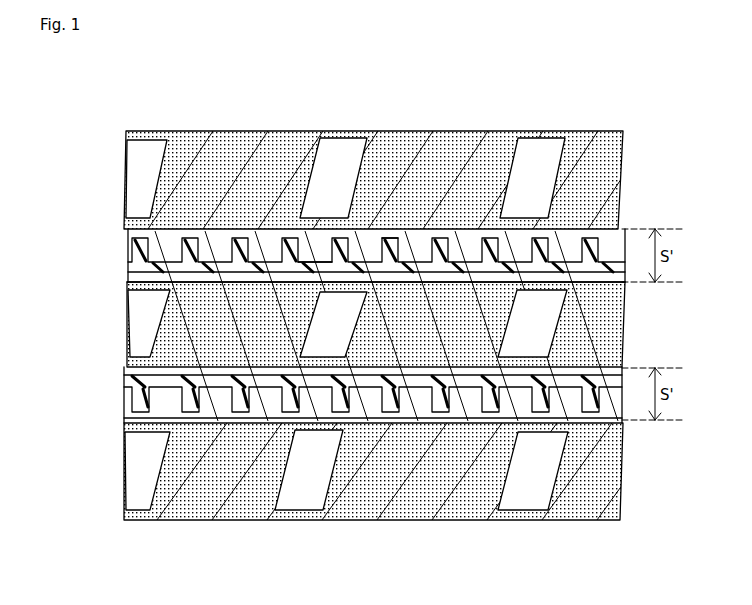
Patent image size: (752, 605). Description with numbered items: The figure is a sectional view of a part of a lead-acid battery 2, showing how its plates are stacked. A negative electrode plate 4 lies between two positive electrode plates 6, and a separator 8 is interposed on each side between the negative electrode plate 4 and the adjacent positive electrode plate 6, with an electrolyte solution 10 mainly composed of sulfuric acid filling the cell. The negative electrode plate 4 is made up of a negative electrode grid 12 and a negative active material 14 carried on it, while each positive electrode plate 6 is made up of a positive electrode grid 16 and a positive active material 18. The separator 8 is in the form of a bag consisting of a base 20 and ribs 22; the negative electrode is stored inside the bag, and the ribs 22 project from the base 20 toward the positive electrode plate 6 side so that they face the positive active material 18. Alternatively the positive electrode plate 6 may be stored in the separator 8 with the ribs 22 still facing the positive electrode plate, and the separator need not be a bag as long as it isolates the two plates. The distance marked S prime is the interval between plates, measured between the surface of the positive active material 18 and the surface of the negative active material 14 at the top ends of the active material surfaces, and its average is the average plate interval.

The lead-acid battery 2 is at (390, 591).
The negative electrode plate 4 is at (124, 330).
The positive electrode plate 6 is at (120, 173).
The separator 8 is at (122, 265).
The electrolyte solution 10 is at (130, 239).
The negative electrode grid 12 is at (145, 310).
The negative active material 14 is at (130, 362).
The positive electrode grid 16 is at (143, 150).
The positive active material 18 is at (235, 138).
The base 20 is at (299, 259).
The ribs 22 is at (398, 241).